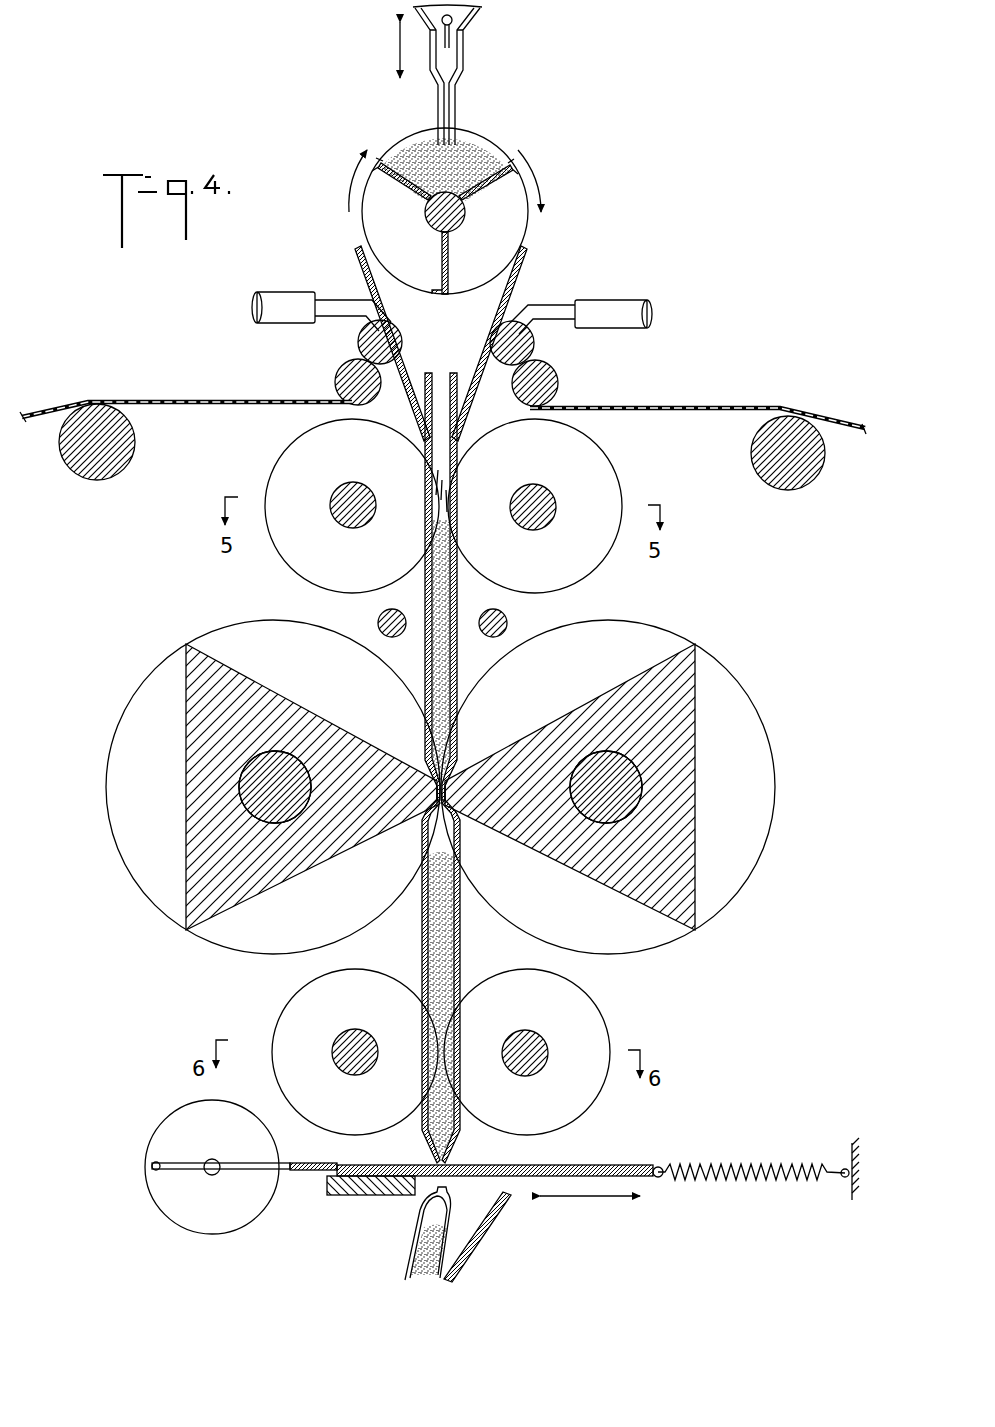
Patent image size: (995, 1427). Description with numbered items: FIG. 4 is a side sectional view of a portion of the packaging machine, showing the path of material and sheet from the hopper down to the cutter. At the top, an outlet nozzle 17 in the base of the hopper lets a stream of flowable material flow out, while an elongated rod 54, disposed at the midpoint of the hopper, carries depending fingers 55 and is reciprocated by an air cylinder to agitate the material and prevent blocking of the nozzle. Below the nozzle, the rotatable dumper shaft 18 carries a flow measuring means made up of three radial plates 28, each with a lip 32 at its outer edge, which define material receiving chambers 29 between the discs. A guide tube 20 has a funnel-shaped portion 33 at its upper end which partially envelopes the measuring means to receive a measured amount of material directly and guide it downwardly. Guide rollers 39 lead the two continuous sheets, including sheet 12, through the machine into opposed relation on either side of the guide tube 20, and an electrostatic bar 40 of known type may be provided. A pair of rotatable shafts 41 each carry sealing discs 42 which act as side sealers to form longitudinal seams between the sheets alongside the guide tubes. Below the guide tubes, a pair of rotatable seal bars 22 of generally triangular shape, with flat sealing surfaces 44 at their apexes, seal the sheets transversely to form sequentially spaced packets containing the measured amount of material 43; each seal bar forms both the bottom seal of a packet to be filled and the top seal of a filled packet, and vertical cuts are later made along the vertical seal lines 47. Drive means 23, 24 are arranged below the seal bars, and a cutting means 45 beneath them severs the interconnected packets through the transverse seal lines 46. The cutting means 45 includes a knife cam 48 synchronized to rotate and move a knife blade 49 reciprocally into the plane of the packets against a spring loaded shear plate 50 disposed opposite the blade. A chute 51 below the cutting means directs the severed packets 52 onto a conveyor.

The continuous sheet 12 is at (678, 405).
The outlet nozzle 17 is at (461, 95).
The dumper shaft 18 is at (425, 213).
The guide tube 20 is at (458, 666).
The rotatable seal bar 22 is at (698, 752).
The drive means 23 is at (300, 1006).
The drive means 24 is at (332, 1050).
The plate 28 is at (505, 175).
The material receiving chamber 29 is at (345, 230).
The lip 32 is at (378, 165).
The funnel-shaped portion 33 is at (530, 263).
The guide roller 39 is at (365, 345).
The electrostatic bar 40 is at (378, 621).
The rotatable shaft 41 is at (358, 486).
The sealing disc 42 is at (296, 452).
The measured amount of material 43 is at (457, 962).
The flat sealing surface 44 is at (192, 642).
The cutting means 45 is at (478, 1159).
The transverse seal line 46 is at (445, 1166).
The vertical seal line 47 is at (436, 791).
The knife cam 48 is at (150, 1196).
The knife blade 49 is at (322, 1161).
The spring loaded shear plate 50 is at (723, 1168).
The chute 51 is at (486, 1228).
The severed packet 52 is at (417, 1232).
The elongated rod 54 is at (452, 22).
The finger 55 is at (451, 45).